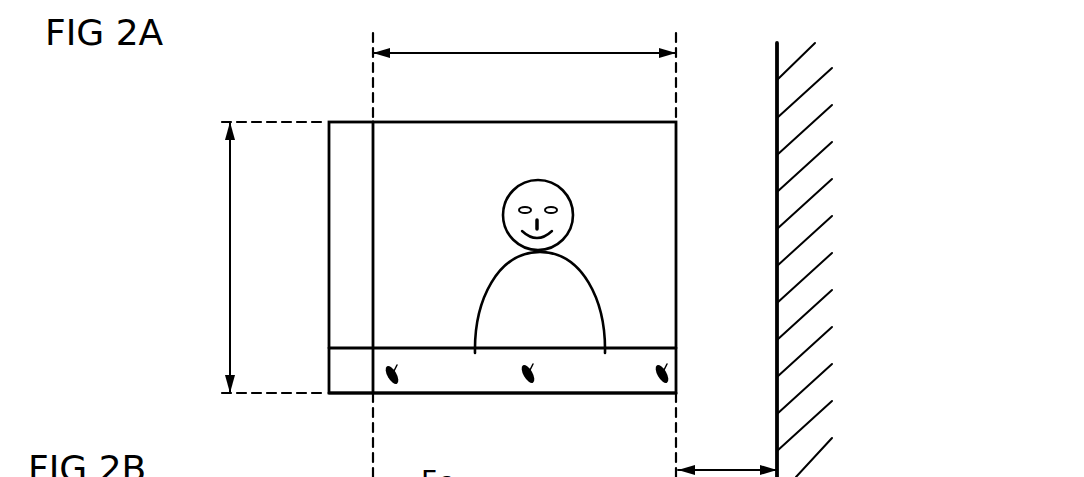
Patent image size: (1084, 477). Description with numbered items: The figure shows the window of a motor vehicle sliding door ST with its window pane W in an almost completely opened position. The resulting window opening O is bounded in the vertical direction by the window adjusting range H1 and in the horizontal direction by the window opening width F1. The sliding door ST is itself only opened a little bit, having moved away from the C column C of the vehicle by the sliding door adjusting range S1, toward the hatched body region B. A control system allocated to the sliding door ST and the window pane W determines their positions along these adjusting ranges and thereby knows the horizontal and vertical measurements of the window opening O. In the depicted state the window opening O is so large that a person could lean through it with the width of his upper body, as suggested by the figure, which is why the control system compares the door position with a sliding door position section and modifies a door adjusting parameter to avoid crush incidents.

The C column C is at (373, 167).
The window opening O is at (648, 193).
The background wall B is at (777, 100).
The sliding door ST is at (500, 393).
The window pane W is at (580, 383).
The window opening width F1 is at (524, 38).
The window adjusting range H1 is at (213, 257).
The sliding door adjusting range S1 is at (727, 456).